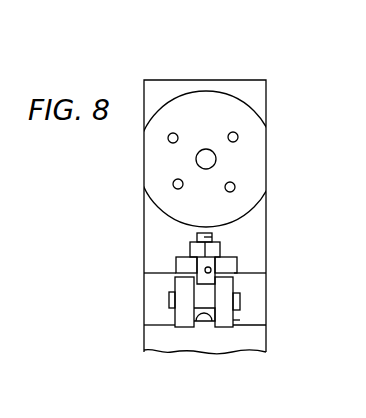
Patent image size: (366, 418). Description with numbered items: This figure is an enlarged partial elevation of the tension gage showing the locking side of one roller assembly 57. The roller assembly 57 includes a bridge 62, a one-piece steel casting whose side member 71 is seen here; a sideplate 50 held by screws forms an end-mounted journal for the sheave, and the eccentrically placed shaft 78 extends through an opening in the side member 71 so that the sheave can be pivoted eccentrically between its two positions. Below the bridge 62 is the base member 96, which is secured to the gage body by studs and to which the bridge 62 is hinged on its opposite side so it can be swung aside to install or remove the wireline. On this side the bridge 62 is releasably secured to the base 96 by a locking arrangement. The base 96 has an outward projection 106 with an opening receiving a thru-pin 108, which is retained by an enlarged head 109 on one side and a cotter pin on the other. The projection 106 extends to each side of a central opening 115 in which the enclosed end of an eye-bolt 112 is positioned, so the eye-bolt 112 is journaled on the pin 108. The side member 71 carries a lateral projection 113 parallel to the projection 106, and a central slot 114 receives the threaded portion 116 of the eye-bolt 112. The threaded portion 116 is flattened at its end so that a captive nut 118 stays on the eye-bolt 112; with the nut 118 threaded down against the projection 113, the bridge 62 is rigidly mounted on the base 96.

The sideplate 50 is at (252, 148).
The roller assembly 57 is at (229, 79).
The bridge 62 is at (267, 97).
The side member 71 is at (174, 92).
The shaft 78 is at (216, 160).
The base member 96 is at (153, 298).
The outward projection 106 is at (185, 314).
The thru-pin 108 is at (240, 296).
The enlarged head 109 is at (238, 313).
The eye-bolt 112 is at (211, 321).
The lateral projection 113 is at (177, 264).
The central slot 114 is at (237, 269).
The central opening 115 is at (185, 328).
The threaded portion 116 is at (220, 257).
The captive nut 118 is at (214, 240).